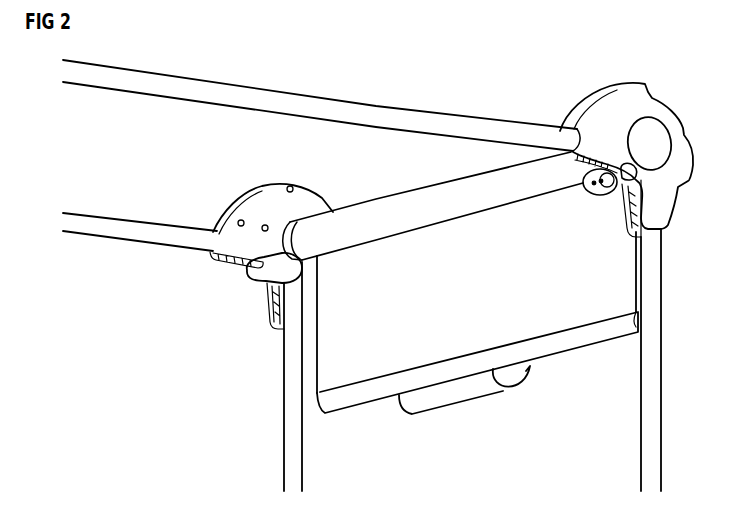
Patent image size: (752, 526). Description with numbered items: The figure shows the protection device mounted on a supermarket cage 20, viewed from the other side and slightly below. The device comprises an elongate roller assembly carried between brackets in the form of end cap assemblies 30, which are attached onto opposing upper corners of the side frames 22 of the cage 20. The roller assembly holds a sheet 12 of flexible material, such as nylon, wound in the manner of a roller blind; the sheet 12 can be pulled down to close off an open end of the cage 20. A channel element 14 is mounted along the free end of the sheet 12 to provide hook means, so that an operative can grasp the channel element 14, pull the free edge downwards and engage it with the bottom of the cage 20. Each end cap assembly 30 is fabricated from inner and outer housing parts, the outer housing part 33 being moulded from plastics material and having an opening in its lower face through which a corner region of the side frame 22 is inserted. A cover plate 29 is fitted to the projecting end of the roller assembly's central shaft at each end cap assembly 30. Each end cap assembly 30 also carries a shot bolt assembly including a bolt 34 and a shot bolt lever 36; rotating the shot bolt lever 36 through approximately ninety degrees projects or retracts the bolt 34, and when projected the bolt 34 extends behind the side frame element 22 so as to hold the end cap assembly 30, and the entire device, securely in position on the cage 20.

The sheet of flexible material 12 is at (476, 312).
The channel element 14 is at (365, 398).
The supermarket cage 20 is at (663, 443).
The side frame 22 is at (473, 116).
The cover plate 29 is at (670, 115).
The end cap assembly 30 is at (236, 197).
The outer housing part 33 is at (669, 228).
The bolt 34 is at (618, 190).
The shot bolt lever 36 is at (262, 279).